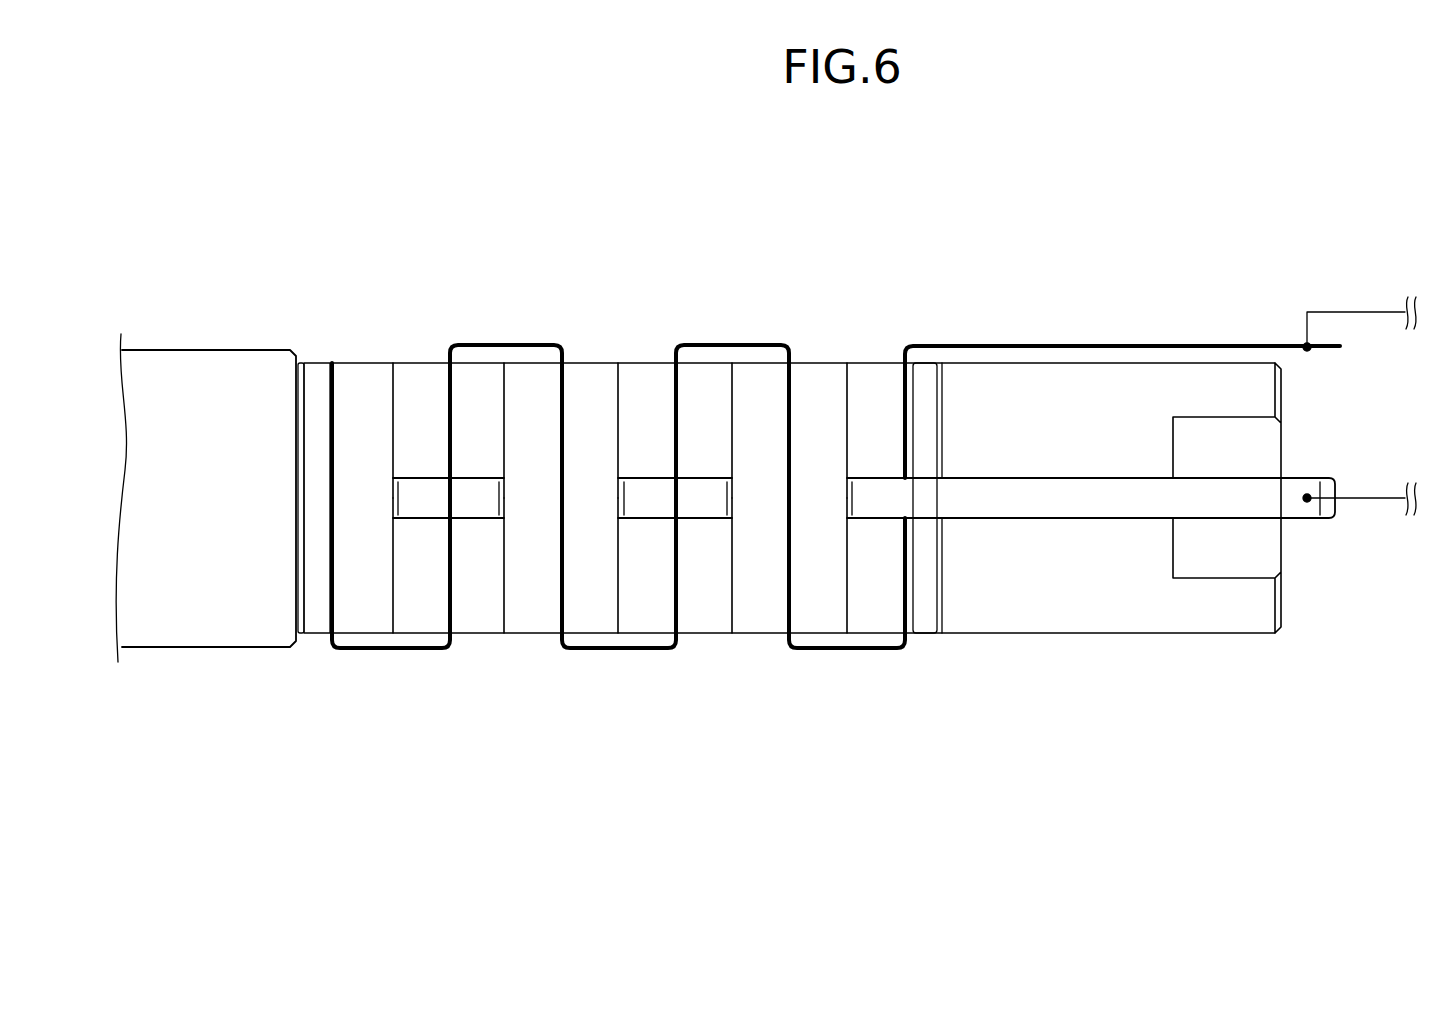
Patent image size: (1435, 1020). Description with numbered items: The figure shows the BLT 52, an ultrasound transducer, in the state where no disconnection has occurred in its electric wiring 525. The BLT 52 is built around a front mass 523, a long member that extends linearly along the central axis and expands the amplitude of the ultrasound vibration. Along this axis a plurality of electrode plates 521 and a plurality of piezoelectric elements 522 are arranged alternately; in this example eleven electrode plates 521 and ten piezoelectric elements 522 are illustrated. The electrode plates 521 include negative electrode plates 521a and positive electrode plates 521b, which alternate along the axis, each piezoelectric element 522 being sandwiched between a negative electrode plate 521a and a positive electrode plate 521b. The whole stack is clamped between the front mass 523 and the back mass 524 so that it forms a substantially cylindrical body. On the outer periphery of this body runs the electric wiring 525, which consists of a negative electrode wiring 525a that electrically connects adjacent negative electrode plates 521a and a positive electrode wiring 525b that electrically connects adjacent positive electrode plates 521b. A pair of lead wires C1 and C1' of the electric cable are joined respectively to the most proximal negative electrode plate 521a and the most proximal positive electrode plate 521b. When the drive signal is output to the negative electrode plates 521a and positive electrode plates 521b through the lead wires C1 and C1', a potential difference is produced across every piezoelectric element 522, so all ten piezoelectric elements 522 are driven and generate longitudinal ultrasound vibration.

The BLT 52 is at (1122, 193).
The electrode plates 521 is at (835, 503).
The negative electrode plates 521a is at (905, 398).
The positive electrode plates 521b is at (393, 602).
The piezoelectric elements 522 is at (352, 622).
The front mass 523 is at (197, 367).
The back mass 524 is at (1057, 383).
The electric wiring 525 is at (739, 542).
The negative electrode wiring 525a is at (842, 763).
The positive electrode wiring 525b is at (413, 497).
The lead wire C1 is at (1359, 301).
The lead wire C1' is at (1359, 477).